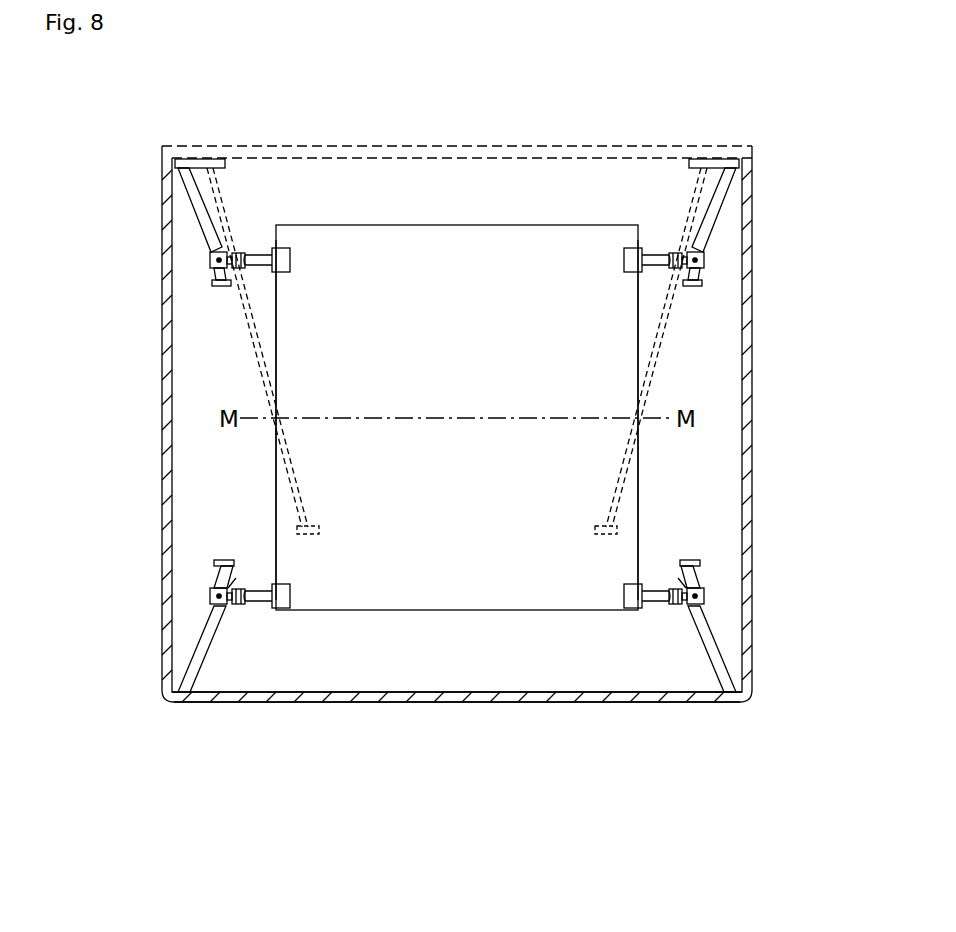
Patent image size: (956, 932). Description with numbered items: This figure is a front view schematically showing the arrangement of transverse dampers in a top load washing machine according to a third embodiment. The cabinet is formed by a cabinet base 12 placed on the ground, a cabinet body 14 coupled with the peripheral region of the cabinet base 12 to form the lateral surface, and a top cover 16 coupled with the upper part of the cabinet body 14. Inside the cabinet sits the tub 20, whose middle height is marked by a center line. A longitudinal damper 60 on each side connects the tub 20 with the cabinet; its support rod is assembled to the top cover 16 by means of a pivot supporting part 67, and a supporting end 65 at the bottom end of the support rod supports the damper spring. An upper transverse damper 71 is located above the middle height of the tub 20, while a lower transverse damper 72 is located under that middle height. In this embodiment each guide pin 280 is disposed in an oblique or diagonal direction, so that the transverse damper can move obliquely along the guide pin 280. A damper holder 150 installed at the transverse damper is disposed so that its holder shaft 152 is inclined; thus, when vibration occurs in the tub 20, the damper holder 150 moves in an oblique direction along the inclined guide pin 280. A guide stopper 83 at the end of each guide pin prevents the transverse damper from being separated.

The cabinet base 12 is at (603, 701).
The cabinet body 14 is at (748, 412).
The top cover 16 is at (543, 147).
The tub 20 is at (463, 226).
The longitudinal damper 60 is at (272, 338).
The supporting end 65 is at (322, 531).
The pivot supporting part 67 is at (203, 160).
The upper transverse damper 71 is at (240, 238).
The lower transverse damper 72 is at (233, 570).
The guide stopper 83 is at (213, 283).
The damper holder 150 is at (210, 262).
The holder shaft 152 is at (210, 597).
The guide pin 280 is at (197, 212).